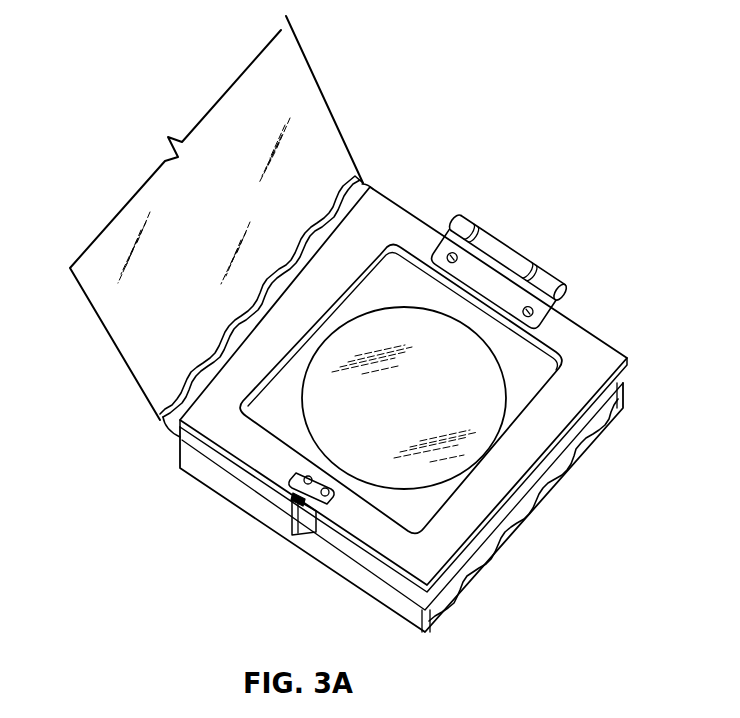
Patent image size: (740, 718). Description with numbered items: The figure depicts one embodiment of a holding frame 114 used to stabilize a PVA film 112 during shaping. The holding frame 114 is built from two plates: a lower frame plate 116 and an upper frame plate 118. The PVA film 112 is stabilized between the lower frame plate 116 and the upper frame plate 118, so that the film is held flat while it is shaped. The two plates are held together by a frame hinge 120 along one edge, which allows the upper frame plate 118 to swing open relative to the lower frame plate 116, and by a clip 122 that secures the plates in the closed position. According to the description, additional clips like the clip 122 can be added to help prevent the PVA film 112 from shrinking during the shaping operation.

The PVA film 112 is at (308, 120).
The holding frame 114 is at (562, 121).
The lower frame plate 116 is at (387, 597).
The upper frame plate 118 is at (597, 354).
The frame hinge 120 is at (507, 262).
The clip 122 is at (287, 498).